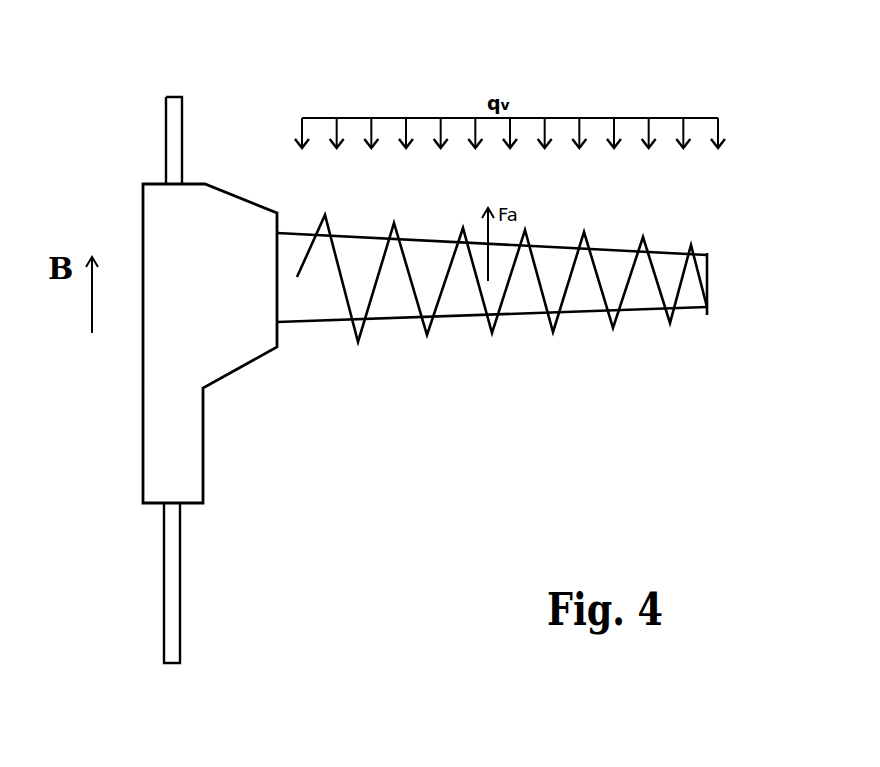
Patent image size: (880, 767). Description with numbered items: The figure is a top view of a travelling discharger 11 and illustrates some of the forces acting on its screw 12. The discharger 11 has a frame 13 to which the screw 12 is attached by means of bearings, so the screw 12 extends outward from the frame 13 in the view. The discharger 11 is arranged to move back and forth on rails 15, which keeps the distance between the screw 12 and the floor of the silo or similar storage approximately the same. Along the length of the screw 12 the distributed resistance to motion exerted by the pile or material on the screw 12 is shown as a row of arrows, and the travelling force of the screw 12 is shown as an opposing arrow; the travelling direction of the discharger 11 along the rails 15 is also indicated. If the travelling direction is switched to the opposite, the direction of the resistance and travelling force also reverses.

The travelling discharger 11 is at (255, 103).
The screw 12 is at (688, 290).
The frame 13 is at (155, 207).
The rails 15 is at (175, 107).